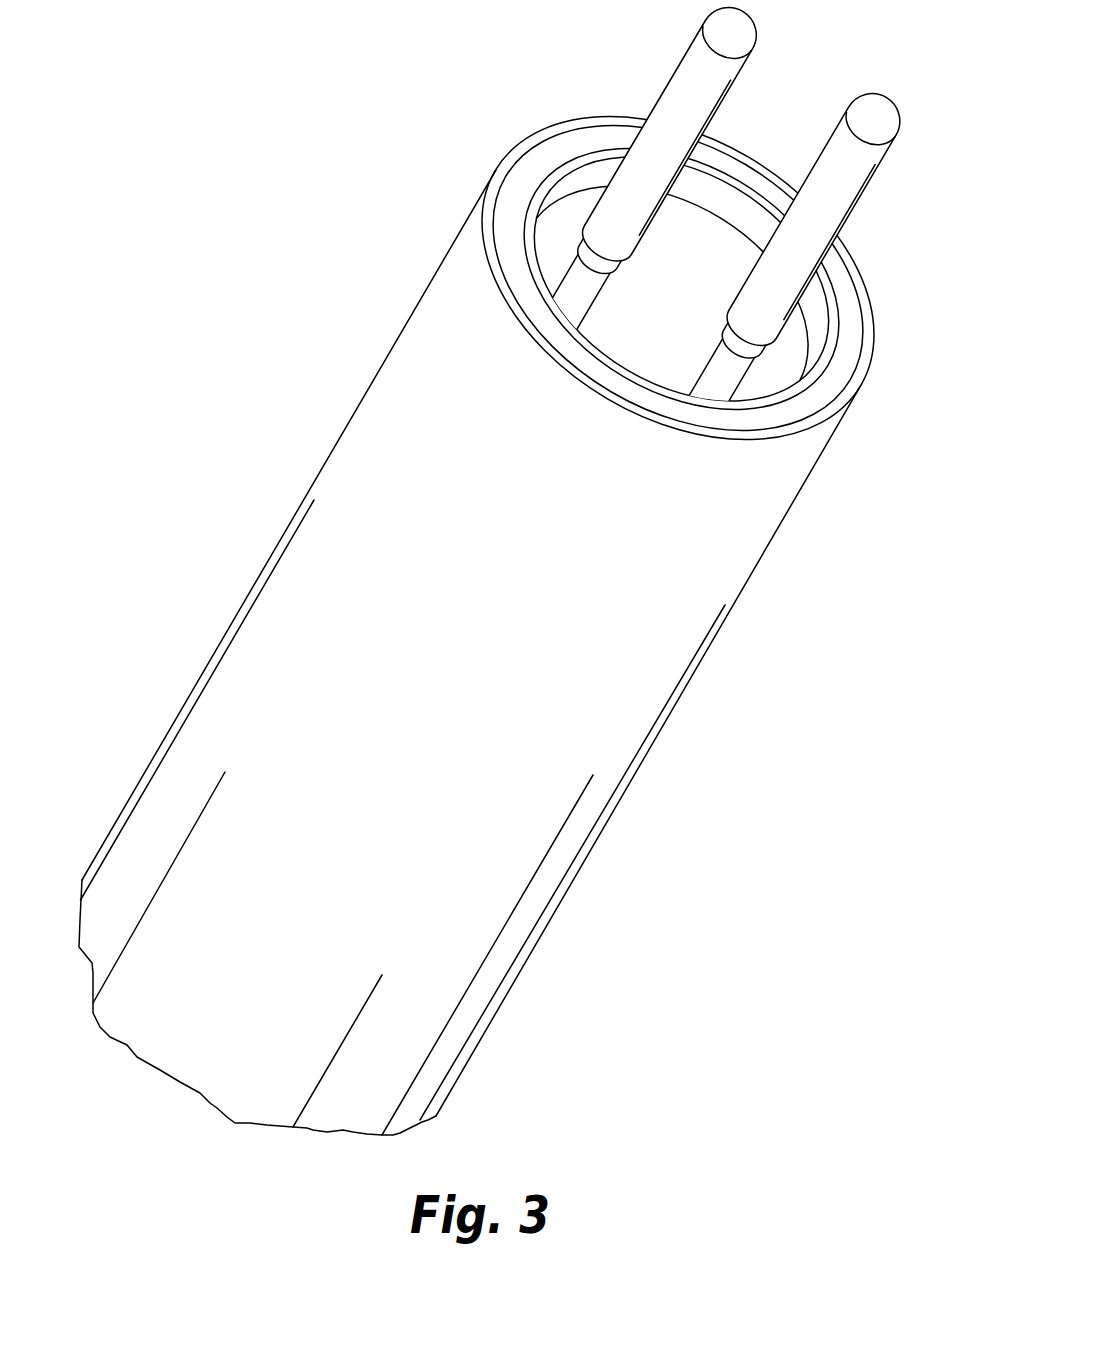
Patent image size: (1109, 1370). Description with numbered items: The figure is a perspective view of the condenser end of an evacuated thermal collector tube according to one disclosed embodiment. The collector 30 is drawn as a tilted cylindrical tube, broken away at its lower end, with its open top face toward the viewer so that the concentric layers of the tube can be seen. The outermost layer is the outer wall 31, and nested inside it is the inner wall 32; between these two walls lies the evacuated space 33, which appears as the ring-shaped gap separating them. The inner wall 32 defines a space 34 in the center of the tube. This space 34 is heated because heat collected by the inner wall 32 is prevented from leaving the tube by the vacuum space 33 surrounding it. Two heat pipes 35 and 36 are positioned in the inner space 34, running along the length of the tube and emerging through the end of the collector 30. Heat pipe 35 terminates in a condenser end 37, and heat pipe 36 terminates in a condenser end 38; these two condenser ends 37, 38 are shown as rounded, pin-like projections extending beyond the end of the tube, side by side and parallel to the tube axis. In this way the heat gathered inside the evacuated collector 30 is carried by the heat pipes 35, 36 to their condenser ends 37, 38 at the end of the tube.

The collector 30 is at (519, 571).
The outer wall 31 is at (868, 374).
The inner wall 32 is at (833, 315).
The evacuated space 33 is at (855, 338).
The space 34 is at (696, 234).
The heat pipe 35 is at (583, 298).
The heat pipe 36 is at (712, 369).
The condenser end 37 is at (680, 61).
The condenser end 38 is at (848, 185).